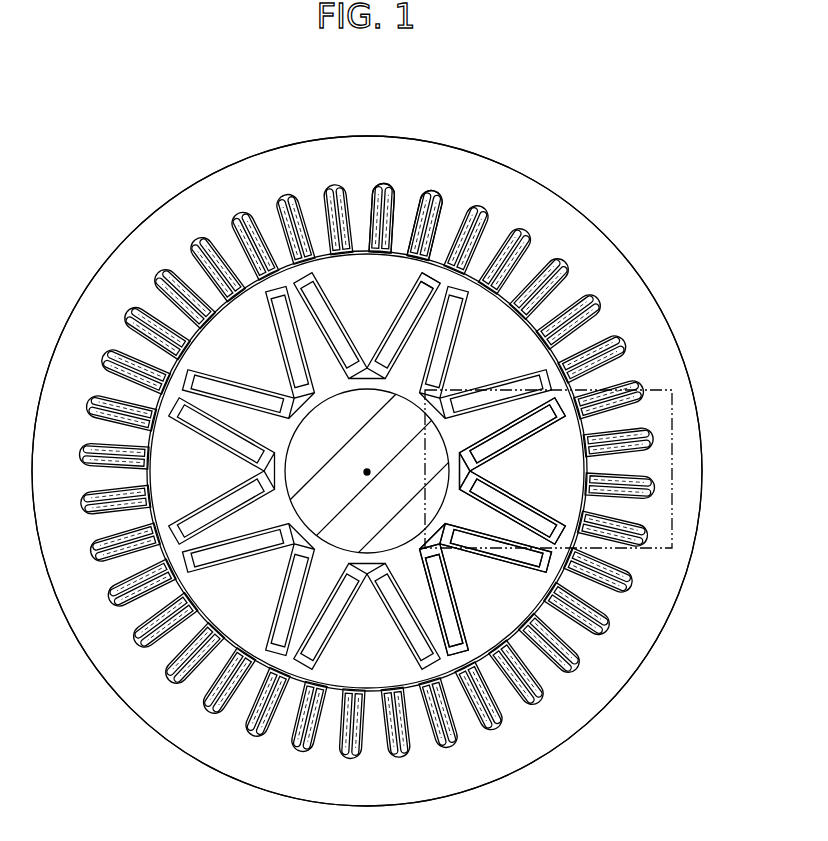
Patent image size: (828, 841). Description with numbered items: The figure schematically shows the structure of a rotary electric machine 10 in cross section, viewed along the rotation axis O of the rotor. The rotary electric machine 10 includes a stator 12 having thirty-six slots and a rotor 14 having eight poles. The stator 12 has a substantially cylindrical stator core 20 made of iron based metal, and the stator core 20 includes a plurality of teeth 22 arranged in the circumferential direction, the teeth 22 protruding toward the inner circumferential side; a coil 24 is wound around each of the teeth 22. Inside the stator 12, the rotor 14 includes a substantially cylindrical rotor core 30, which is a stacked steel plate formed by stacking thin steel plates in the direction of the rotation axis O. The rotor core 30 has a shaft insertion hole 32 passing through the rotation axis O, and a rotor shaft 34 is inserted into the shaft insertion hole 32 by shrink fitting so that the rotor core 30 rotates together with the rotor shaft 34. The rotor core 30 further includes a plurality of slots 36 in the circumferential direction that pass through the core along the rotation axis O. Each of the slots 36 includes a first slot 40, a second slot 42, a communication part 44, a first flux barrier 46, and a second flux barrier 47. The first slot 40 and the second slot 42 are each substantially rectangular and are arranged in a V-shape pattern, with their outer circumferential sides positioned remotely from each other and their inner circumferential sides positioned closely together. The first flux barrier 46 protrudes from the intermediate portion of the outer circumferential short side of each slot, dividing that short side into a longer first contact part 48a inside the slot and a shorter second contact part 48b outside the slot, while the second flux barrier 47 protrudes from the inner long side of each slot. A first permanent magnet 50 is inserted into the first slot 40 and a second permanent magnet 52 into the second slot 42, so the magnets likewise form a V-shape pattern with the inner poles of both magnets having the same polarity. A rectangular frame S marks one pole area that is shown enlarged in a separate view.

The rotary electric machine 10 is at (214, 87).
The stator 12 is at (481, 150).
The rotor 14 is at (367, 452).
The stator core 20 is at (367, 452).
The teeth 22 is at (498, 292).
The coil 24 is at (494, 297).
The rotor core 30 is at (364, 462).
The shaft insertion hole 32 is at (343, 396).
The rotor shaft 34 is at (306, 464).
The slots 36 is at (515, 458).
The first slot 40 is at (513, 418).
The second slot 42 is at (518, 522).
The communication part 44 is at (463, 468).
The first flux barrier 46 is at (427, 262).
The second flux barrier 47 is at (416, 256).
The first contact part 48a is at (426, 279).
The second contact part 48b is at (424, 290).
The first permanent magnet 50 is at (492, 443).
The second permanent magnet 52 is at (490, 498).
The rectangular frame S is at (663, 386).
The rotation axis O is at (358, 460).